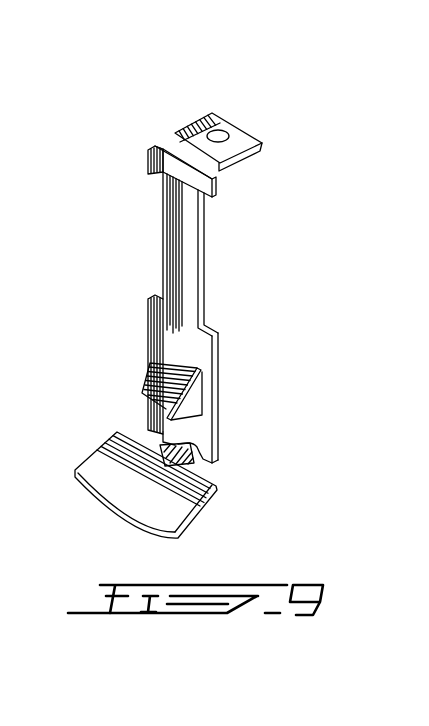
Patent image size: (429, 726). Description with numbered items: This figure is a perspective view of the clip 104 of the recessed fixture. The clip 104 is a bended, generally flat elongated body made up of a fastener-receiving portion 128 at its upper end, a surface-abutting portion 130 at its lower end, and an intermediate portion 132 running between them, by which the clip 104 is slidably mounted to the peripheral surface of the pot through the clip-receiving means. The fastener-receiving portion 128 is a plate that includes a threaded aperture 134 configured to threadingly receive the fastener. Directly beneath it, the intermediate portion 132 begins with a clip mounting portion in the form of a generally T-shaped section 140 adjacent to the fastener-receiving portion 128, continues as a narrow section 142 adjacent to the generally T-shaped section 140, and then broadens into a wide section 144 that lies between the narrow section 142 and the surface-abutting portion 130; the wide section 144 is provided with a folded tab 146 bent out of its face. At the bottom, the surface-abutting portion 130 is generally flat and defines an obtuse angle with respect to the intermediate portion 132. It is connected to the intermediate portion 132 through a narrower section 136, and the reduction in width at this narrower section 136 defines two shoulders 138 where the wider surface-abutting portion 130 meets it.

The clip 104 is at (150, 124).
The fastener-receiving portion 128 is at (264, 159).
The surface-abutting portion 130 is at (210, 522).
The intermediate portion 132 is at (217, 302).
The threaded aperture 134 is at (220, 136).
The narrower section 136 is at (196, 447).
The shoulders 138 is at (218, 489).
The generally T-shaped section 140 is at (213, 195).
The narrow section 142 is at (203, 253).
The wide section 144 is at (220, 383).
The folded tab 146 is at (172, 409).